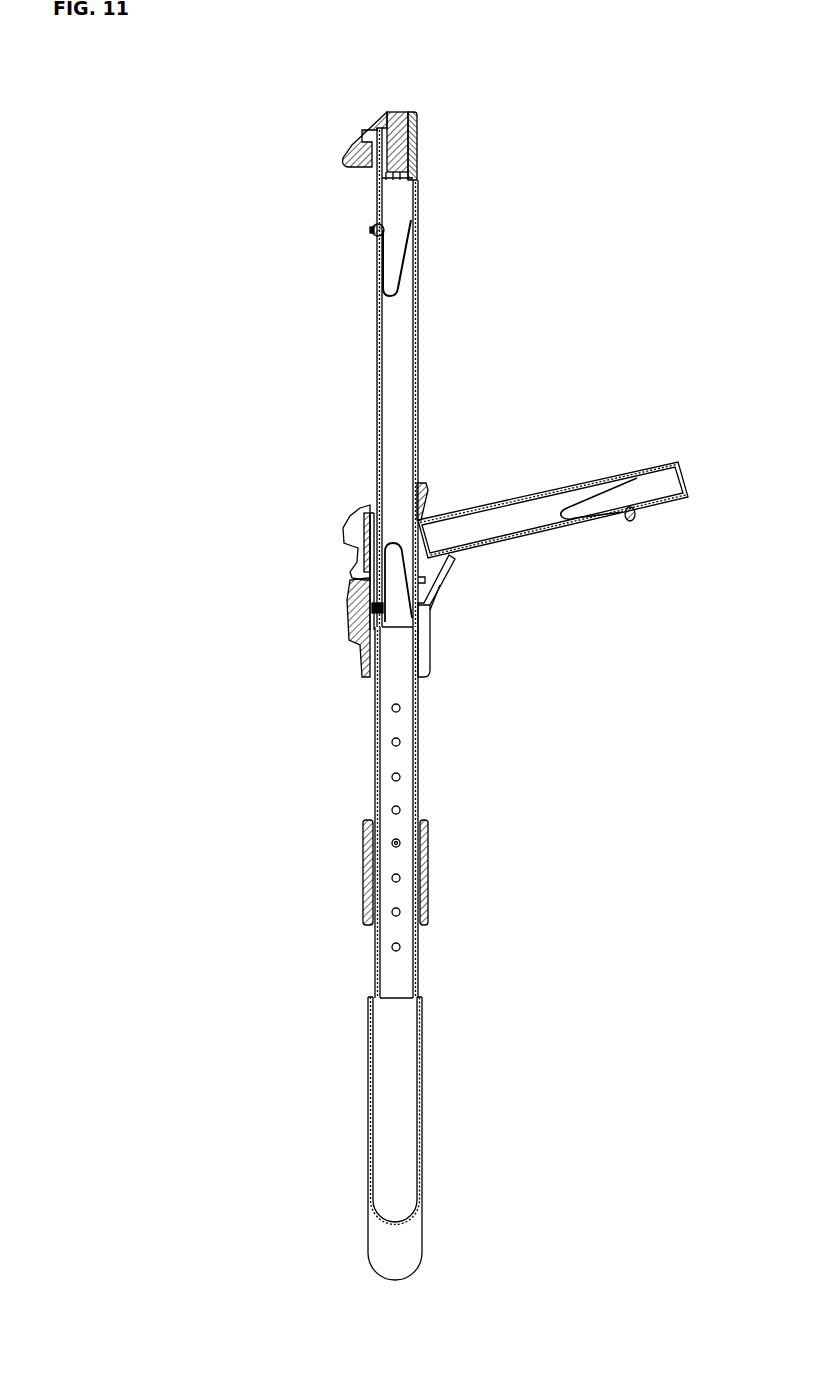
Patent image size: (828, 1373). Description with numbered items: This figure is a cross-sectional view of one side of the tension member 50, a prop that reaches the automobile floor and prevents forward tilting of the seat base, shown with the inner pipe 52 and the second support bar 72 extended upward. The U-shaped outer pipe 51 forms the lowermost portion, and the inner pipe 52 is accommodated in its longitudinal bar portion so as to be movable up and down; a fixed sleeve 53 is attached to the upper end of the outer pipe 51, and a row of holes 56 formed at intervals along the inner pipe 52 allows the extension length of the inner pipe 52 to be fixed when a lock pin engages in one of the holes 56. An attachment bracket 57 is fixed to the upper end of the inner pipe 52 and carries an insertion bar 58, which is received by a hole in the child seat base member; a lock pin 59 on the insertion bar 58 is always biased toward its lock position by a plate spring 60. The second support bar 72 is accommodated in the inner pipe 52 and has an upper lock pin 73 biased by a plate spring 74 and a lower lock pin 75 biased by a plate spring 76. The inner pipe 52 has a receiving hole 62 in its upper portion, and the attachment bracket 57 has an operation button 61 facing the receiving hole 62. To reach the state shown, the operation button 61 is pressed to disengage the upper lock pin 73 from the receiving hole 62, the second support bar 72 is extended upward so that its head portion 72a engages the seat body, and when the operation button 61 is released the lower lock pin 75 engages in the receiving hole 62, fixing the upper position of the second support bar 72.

The tension member 50 is at (355, 1283).
The outer pipe 51 is at (422, 1083).
The inner pipe 52 is at (405, 799).
The fixed sleeve 53 is at (428, 860).
The holes 56 is at (402, 742).
The attachment bracket 57 is at (428, 620).
The insertion bar 58 is at (527, 500).
The lock pin 59 is at (632, 522).
The plate spring 60 is at (590, 488).
The operation button 61 is at (352, 603).
The receiving hole 62 is at (362, 570).
The second support bar 72 is at (418, 405).
The head portion 72a is at (402, 112).
The upper lock pin 73 is at (372, 230).
The plate spring 74 is at (400, 277).
The lower lock pin 75 is at (372, 610).
The plate spring 76 is at (392, 543).